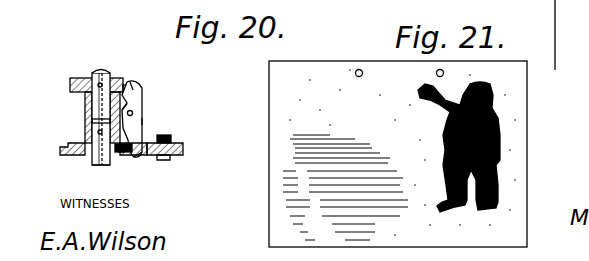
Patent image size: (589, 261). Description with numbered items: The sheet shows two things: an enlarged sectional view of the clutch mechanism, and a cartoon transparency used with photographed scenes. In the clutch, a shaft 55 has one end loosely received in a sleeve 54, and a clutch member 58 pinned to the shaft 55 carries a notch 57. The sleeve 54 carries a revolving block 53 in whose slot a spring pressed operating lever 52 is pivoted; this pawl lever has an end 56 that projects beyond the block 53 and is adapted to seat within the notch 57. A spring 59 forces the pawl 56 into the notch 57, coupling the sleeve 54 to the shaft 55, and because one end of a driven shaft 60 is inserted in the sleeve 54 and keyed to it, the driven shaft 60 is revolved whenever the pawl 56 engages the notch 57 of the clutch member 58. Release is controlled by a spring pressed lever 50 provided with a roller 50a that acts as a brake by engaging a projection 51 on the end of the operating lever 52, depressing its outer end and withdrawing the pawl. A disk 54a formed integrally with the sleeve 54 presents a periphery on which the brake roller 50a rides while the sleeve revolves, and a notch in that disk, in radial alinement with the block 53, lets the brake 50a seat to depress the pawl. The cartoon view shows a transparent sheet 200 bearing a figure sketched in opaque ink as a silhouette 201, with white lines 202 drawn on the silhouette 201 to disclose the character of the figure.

In FIG. 20, the spring pressed lever 50 is at (182, 142).
In FIG. 20, the roller 50a is at (149, 156).
In FIG. 20, the projection 51 is at (141, 145).
In FIG. 20, the spring pressed operating lever 52 is at (143, 103).
In FIG. 20, the revolving block 53 is at (144, 123).
In FIG. 20, the sleeve 54 is at (86, 112).
In FIG. 20, the disk 54a is at (88, 150).
In FIG. 20, the shaft 55 is at (106, 72).
In FIG. 20, the pawl end 56 is at (141, 98).
In FIG. 20, the notch 57 is at (131, 82).
In FIG. 20, the clutch member 58 is at (80, 78).
In FIG. 20, the spring 59 is at (122, 153).
In FIG. 20, the driven shaft 60 is at (100, 163).
In FIG. 21, the transparent sheet 200 is at (336, 70).
In FIG. 21, the silhouette 201 is at (500, 143).
In FIG. 21, the white lines 202 is at (494, 86).